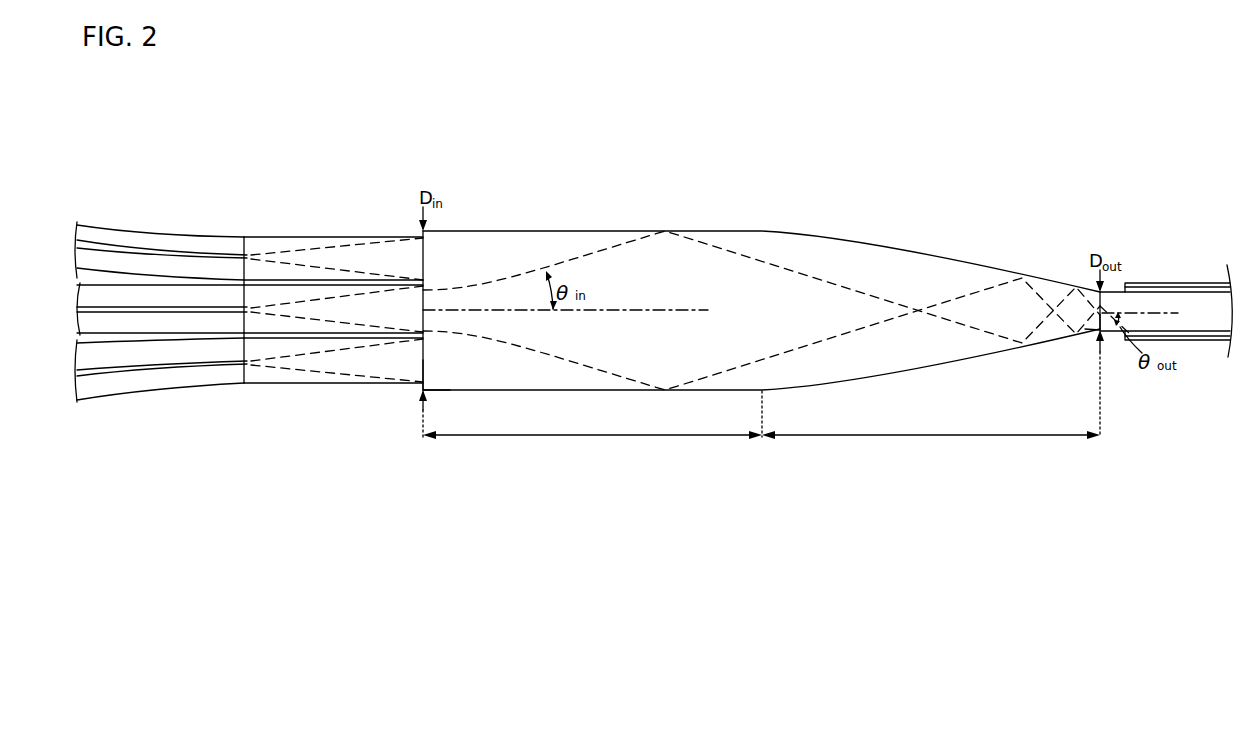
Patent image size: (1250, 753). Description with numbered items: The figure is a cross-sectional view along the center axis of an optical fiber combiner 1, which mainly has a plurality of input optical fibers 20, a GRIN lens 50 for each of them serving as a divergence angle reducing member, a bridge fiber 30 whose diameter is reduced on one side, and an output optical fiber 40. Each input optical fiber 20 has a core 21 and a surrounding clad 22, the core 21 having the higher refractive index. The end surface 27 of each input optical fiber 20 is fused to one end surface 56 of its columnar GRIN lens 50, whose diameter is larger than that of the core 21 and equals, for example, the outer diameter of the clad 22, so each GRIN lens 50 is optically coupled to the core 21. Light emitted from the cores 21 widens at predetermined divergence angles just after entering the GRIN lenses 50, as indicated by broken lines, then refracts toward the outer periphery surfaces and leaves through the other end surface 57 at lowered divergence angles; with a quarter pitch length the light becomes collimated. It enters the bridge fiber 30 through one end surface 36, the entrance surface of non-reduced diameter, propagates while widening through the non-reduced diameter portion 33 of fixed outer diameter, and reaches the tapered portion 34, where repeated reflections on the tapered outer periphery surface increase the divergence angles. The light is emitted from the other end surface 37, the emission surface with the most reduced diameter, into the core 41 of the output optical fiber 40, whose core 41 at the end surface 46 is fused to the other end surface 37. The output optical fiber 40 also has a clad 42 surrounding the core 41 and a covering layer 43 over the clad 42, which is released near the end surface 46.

The optical fiber combiner 1 is at (960, 105).
The input optical fiber 20 is at (161, 308).
The core 21 is at (142, 256).
The clad 22 is at (166, 247).
The end surface 27 is at (325, 306).
The bridge fiber 30 is at (764, 302).
The non-reduced diameter portion 33 is at (590, 425).
The tapered portion 34 is at (931, 406).
The one end surface 36 is at (421, 369).
The other end surface 37 is at (1103, 340).
The output optical fiber 40 is at (1166, 288).
The core 41 is at (1128, 300).
The clad 42 is at (1142, 288).
The covering layer 43 is at (1168, 283).
The end surface 46 is at (1100, 303).
The GRIN lens 50 is at (333, 237).
The one end surface 56 is at (243, 381).
The other end surface 57 is at (425, 250).